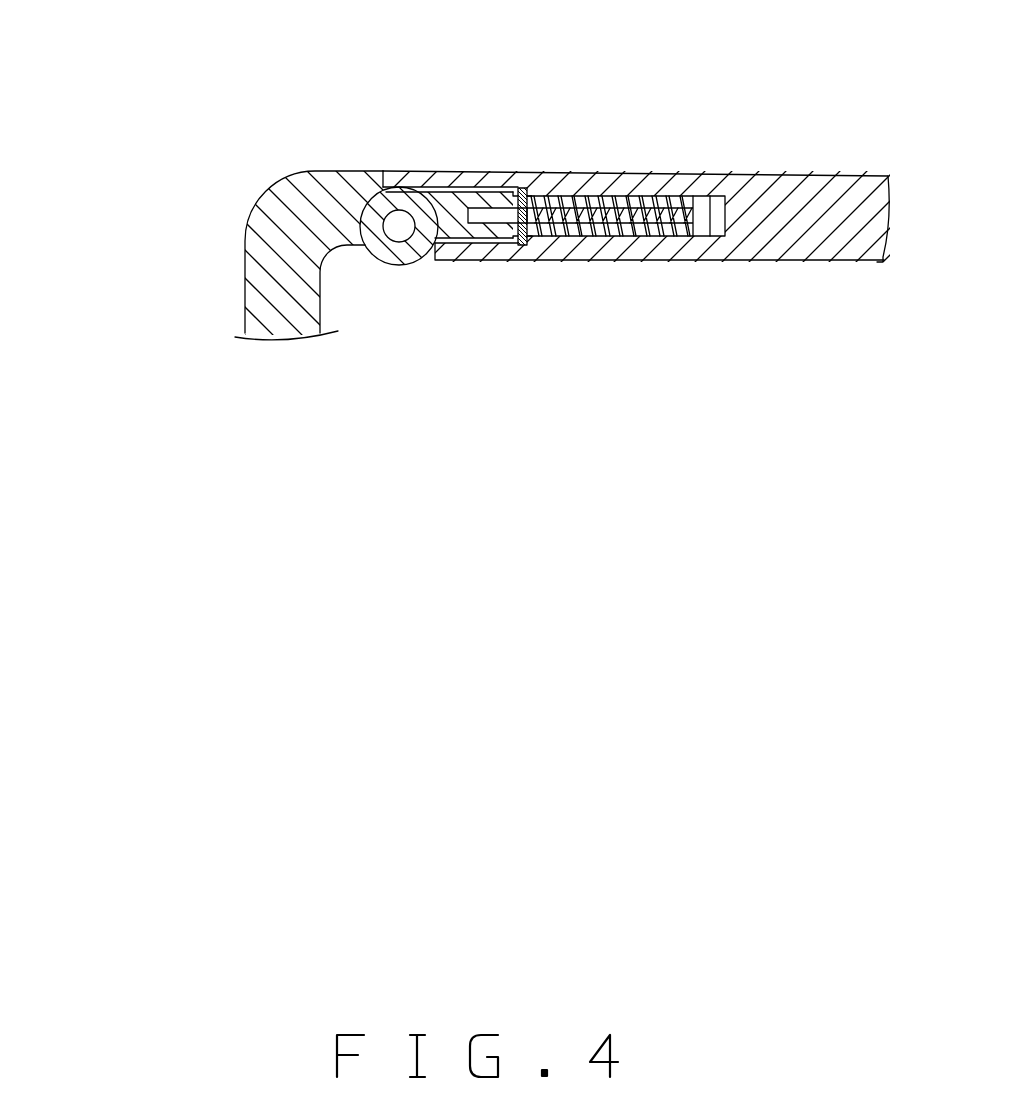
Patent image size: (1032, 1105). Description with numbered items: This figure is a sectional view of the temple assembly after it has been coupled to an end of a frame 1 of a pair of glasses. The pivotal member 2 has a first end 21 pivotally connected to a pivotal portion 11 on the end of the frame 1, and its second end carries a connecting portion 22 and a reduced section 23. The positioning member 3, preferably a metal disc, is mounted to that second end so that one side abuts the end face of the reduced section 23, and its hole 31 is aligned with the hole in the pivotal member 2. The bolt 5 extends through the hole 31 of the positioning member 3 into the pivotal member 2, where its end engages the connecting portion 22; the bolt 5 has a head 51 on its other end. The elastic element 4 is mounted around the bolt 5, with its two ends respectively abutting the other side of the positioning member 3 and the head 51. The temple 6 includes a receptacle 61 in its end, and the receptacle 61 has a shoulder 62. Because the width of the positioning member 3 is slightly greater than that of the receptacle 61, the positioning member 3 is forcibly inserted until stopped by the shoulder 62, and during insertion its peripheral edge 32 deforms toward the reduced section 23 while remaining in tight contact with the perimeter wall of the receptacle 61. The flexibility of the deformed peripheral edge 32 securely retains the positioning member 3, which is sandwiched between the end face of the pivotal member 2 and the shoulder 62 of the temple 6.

The frame 1 is at (280, 240).
The pivotal portion 11 is at (396, 240).
The pivotal member 2 is at (426, 251).
The first end 21 is at (410, 240).
The connecting portion 22 is at (458, 186).
The reduced section 23 is at (518, 243).
The positioning member 3 is at (563, 227).
The hole 31 is at (520, 222).
The peripheral edge 32 is at (518, 188).
The elastic element 4 is at (640, 233).
The bolt 5 is at (634, 321).
The head 51 is at (703, 218).
The temple 6 is at (633, 226).
The receptacle 61 is at (664, 190).
The shoulder 62 is at (524, 190).